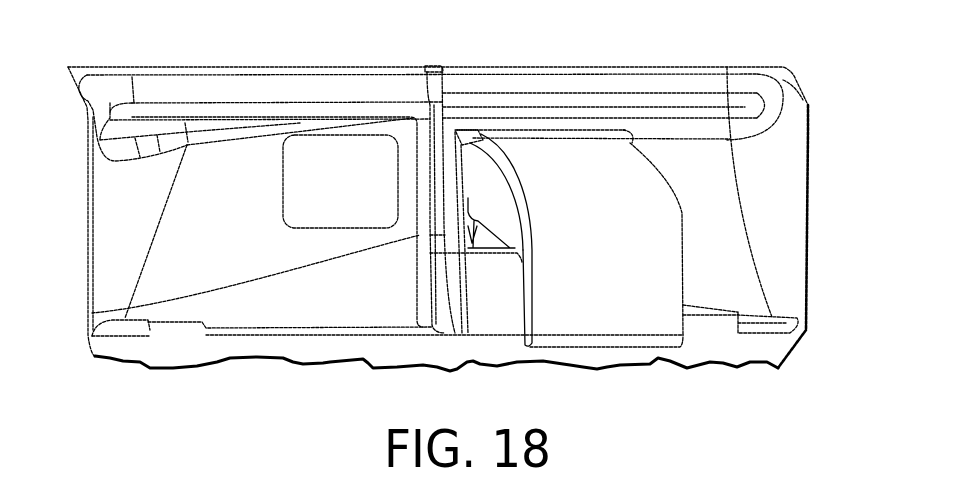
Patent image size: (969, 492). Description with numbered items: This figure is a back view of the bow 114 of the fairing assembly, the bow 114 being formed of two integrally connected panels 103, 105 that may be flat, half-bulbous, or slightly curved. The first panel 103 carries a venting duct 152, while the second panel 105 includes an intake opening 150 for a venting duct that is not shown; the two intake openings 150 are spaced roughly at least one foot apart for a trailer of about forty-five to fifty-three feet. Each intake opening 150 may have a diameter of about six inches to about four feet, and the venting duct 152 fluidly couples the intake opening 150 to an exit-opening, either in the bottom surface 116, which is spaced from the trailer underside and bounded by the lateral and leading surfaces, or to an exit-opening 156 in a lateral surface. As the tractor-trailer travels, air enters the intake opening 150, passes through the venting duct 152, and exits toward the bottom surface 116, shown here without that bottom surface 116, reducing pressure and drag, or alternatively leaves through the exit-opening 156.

The panel 103 is at (150, 283).
The panel 105 is at (750, 280).
The bow 114 is at (497, 57).
The bottom surface 116 is at (713, 350).
The intake opening 150 is at (350, 147).
The venting duct 152 is at (667, 221).
The exit-opening 156 is at (652, 350).